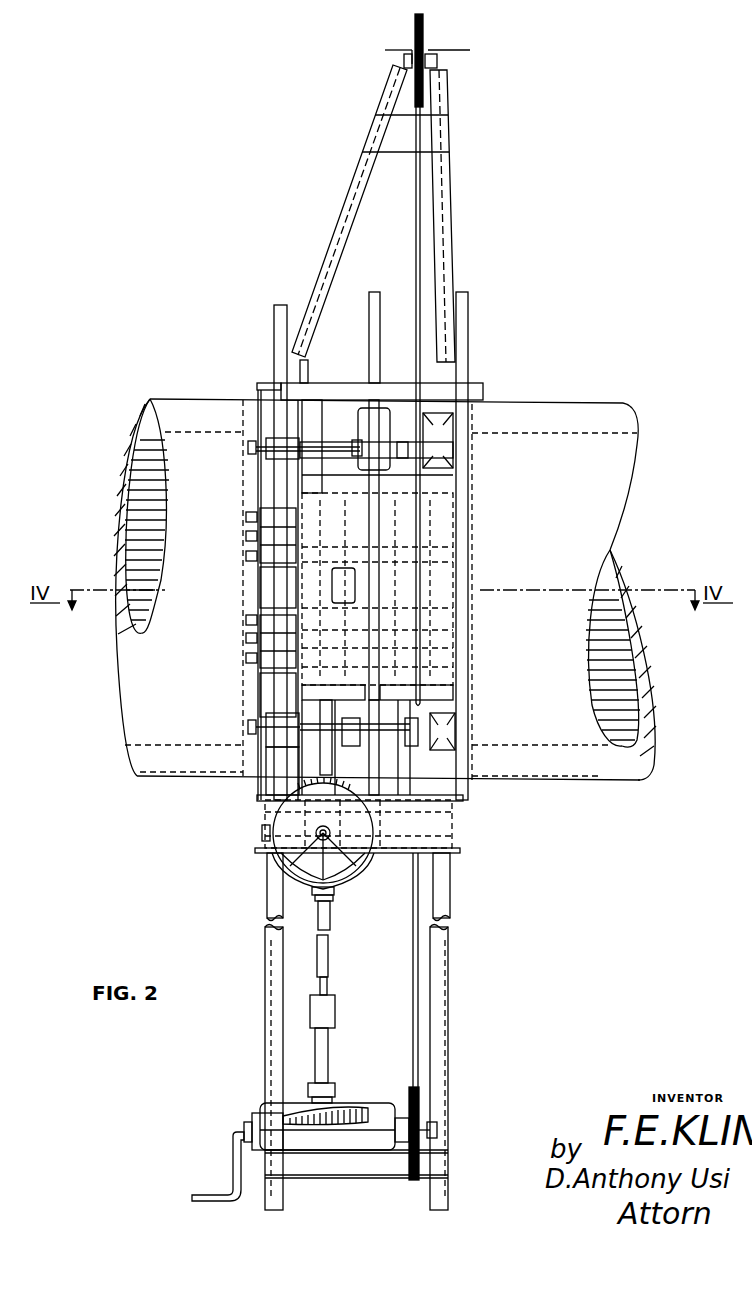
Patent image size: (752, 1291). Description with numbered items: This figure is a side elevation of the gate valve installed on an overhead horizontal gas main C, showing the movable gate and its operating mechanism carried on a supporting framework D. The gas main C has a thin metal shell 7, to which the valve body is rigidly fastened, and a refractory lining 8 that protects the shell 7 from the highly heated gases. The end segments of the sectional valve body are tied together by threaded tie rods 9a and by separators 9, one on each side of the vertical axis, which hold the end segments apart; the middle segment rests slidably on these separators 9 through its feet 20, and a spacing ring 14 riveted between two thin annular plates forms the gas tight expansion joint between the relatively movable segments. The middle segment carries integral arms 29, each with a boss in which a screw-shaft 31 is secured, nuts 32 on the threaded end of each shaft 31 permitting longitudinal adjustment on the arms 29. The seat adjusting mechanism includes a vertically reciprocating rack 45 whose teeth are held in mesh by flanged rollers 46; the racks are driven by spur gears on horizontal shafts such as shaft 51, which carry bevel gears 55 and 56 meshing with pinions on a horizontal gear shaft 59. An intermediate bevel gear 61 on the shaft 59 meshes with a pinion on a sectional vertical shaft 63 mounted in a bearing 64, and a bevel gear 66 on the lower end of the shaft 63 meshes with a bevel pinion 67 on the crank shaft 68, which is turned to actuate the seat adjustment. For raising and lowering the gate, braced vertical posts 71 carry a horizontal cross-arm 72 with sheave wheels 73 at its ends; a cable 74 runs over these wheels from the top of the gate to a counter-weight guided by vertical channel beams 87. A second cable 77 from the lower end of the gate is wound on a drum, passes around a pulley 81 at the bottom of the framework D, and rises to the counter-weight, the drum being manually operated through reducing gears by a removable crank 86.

The metal shell 7 is at (157, 778).
The refractory lining 8 is at (654, 753).
The horizontal gas main C is at (125, 700).
The supporting framework D is at (372, 751).
The distance pieces or separators 9 is at (393, 518).
The bolts or threaded tie rods 9a is at (250, 656).
The spacing ring 14 is at (322, 760).
The feet 20 is at (343, 585).
The integral arms 29 is at (393, 400).
The screw-shafts 31 is at (355, 743).
The nuts 32 is at (418, 727).
The rack 45 is at (277, 773).
The flanged rollers 46 is at (280, 445).
The horizontal shaft 51 is at (262, 832).
The bevel gear 55 is at (377, 813).
The bevel gear 56 is at (319, 841).
The horizontal shaft 59 is at (308, 847).
The bevel gear 61 is at (358, 872).
The vertical shaft 63 is at (328, 955).
The bearing 64 is at (333, 893).
The bevel gear 66 is at (343, 1113).
The bevel pinion 67 is at (282, 1148).
The crank shaft 68 is at (373, 1135).
The vertical posts 71 is at (340, 222).
The horizontal cross-arm 72 is at (401, 51).
The idler pulleys or sheave wheels 73 is at (424, 30).
The cable or flexible connection 74 is at (416, 260).
The cable or flexible connection 77 is at (414, 937).
The pulley 81 is at (420, 1093).
The removable crank 86 is at (233, 1173).
The channel beams 87 is at (371, 333).